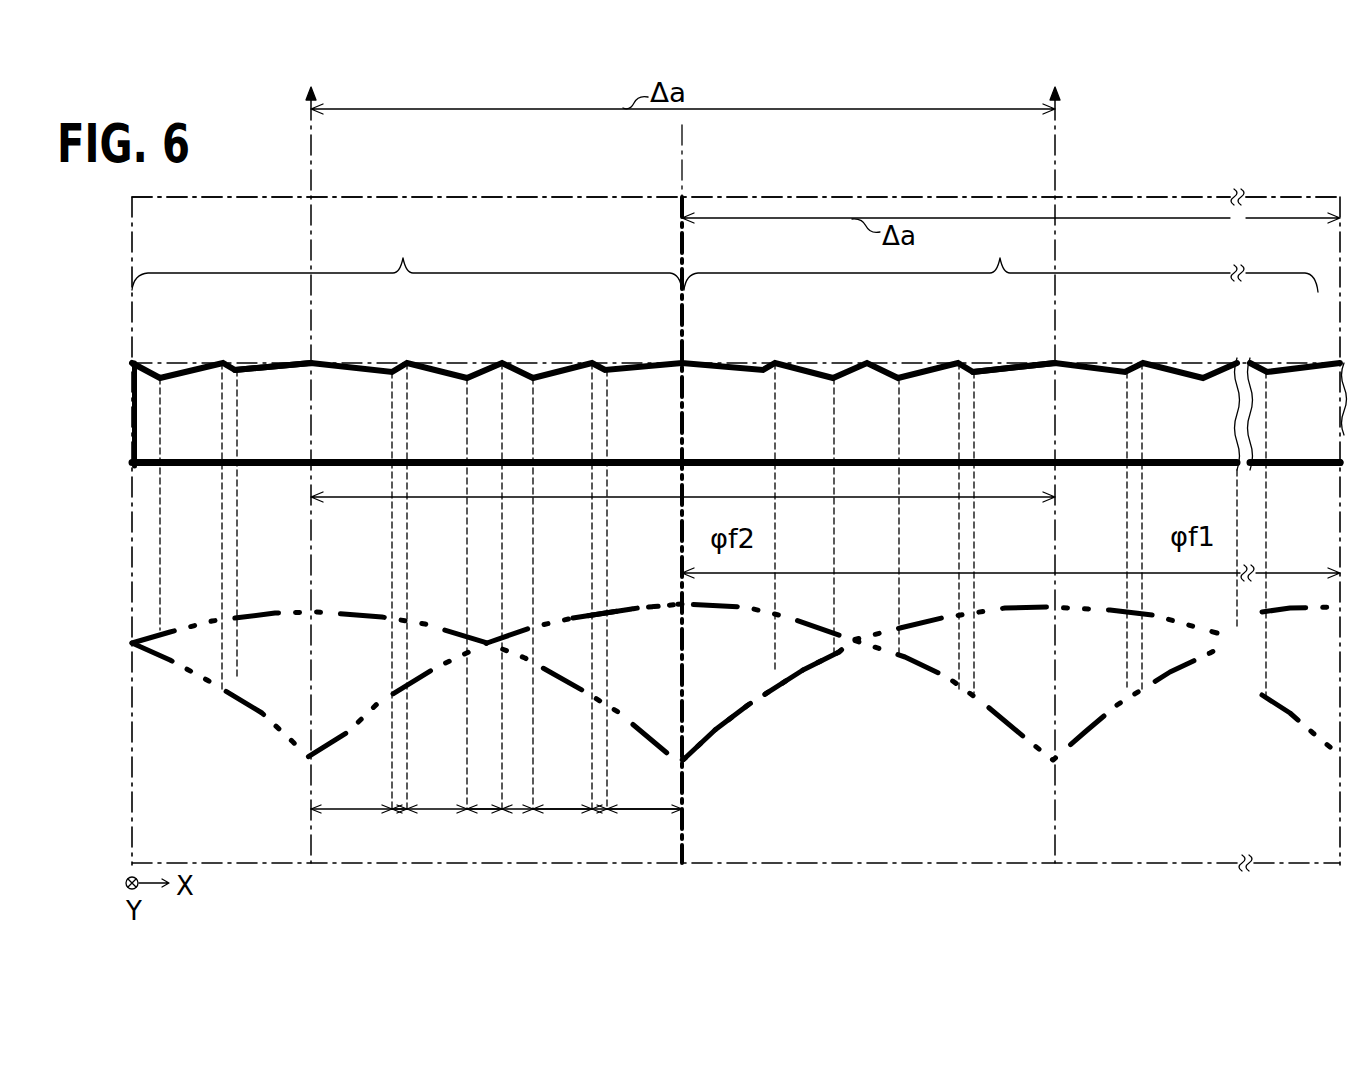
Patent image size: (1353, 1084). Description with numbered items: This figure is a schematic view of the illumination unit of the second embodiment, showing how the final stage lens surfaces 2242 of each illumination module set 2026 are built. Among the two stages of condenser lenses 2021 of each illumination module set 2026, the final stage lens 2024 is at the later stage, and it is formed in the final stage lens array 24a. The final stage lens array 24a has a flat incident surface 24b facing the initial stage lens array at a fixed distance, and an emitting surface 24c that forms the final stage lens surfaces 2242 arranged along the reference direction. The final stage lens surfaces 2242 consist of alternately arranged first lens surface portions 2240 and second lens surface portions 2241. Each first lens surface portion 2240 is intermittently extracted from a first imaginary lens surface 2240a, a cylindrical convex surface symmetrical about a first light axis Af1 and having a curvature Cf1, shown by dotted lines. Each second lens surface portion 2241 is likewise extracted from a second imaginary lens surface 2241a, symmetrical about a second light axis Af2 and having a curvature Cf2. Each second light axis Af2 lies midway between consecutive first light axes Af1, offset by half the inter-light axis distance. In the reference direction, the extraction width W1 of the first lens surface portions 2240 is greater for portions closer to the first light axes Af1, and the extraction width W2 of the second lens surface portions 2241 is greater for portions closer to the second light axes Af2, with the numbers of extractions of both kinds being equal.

The first lens surface portion 2240 is at (196, 361).
The second lens surface portion 2241 is at (147, 363).
The final stage lens surfaces 2242 is at (725, 261).
The illumination module set 2026 is at (528, 195).
The final stage lens array 24a is at (198, 445).
The incident surface 24b is at (1302, 466).
The emitting surface 24c is at (1333, 362).
The condenser lenses 2021 is at (302, 373).
The final stage lens 2024 is at (1043, 373).
The first imaginary lens surface 2240a is at (351, 607).
The second imaginary lens surface 2241a is at (258, 700).
The first light axis Af1 is at (311, 178).
The second light axis Af2 is at (684, 162).
The curvature Cf1 is at (750, 688).
The curvature Cf2 is at (634, 602).
The extraction width W1 is at (356, 812).
The extraction width W2 is at (402, 812).